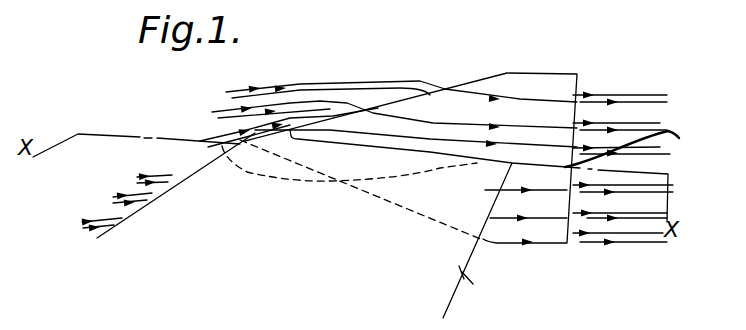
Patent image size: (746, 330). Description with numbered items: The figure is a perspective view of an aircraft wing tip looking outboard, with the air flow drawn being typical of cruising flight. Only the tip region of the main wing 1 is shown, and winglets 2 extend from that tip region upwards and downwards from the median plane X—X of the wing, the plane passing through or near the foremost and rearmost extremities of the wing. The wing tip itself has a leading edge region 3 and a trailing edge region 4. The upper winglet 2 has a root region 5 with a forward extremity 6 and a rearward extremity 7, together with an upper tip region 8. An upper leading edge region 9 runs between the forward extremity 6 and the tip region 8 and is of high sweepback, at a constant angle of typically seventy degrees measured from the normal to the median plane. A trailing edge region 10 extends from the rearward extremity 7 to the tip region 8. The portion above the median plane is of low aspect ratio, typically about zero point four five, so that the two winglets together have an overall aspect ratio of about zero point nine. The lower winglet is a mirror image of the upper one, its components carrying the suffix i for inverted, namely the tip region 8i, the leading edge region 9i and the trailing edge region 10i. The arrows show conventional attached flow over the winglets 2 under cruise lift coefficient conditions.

The main wing 1 is at (153, 245).
The winglet 2 is at (542, 117).
The leading edge region 3 is at (195, 173).
The trailing edge region 4 is at (477, 240).
The root region 5 is at (434, 186).
The forward extremity 6 is at (272, 135).
The rearward extremity 7 is at (629, 143).
The upper tip region 8 is at (517, 87).
The tip region of inverted winglet 8i is at (542, 243).
The upper leading edge region 9 is at (458, 90).
The leading edge region of inverted winglet 9i is at (424, 212).
The trailing edge region 10 is at (576, 104).
The trailing edge region of inverted winglet 10i is at (572, 197).